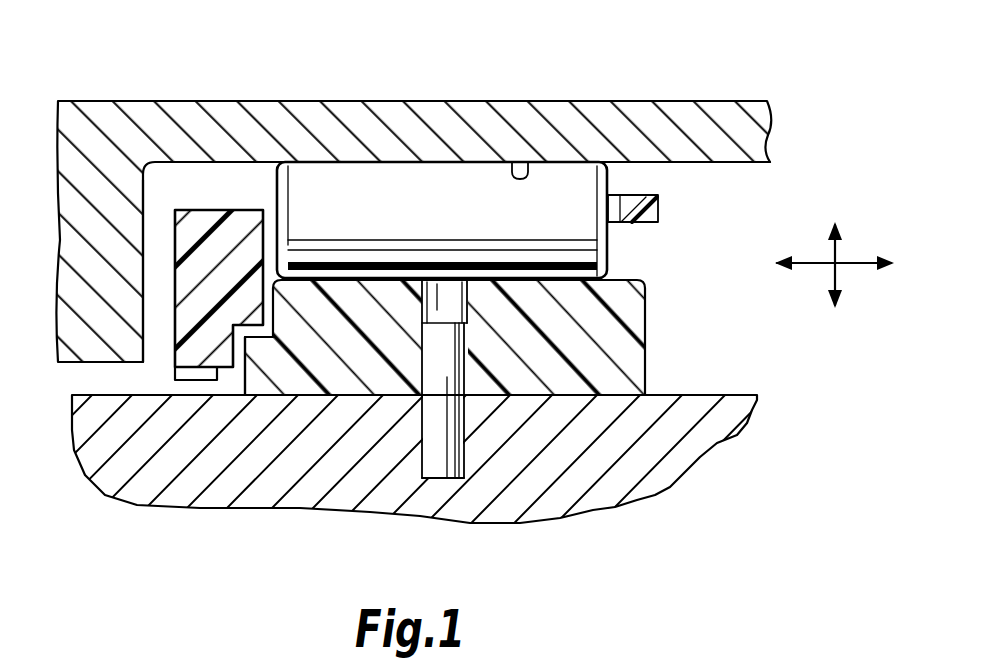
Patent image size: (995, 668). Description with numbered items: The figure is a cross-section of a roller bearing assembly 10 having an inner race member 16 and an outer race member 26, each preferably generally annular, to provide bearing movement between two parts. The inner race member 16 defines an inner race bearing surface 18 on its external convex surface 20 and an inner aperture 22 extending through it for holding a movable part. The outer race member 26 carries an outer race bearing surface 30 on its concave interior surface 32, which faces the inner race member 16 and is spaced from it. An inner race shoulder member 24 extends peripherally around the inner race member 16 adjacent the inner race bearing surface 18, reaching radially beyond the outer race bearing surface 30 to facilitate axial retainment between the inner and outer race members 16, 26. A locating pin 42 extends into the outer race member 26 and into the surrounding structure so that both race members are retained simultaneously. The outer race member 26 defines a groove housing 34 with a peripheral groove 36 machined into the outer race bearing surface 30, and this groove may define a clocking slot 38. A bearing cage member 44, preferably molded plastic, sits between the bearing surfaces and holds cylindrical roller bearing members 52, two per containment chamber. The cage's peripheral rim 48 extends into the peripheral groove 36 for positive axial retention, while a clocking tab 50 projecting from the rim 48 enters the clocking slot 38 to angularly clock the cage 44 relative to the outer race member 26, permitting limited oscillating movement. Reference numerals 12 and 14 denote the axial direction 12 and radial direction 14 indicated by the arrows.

The roller bearing assembly 10 is at (704, 90).
The axial direction 12 is at (838, 267).
The radial direction 14 is at (837, 251).
The inner race member 16 is at (485, 142).
The inner race bearing surface 18 is at (524, 167).
The external convex surface 20 is at (728, 163).
The inner aperture 22 is at (188, 101).
The inner race shoulder member 24 is at (113, 312).
The outer race member 26 is at (588, 353).
The outer race bearing surface 30 is at (388, 272).
The concave interior surface 32 is at (266, 280).
The groove housing 34 is at (177, 395).
The peripheral groove 36 is at (252, 345).
The clocking slot 38 is at (175, 377).
The locating pin 42 is at (443, 480).
The bearing cage member 44 is at (228, 210).
The peripheral rim 48 is at (228, 296).
The clocking tab 50 is at (217, 395).
The roller bearing members 52 is at (453, 214).